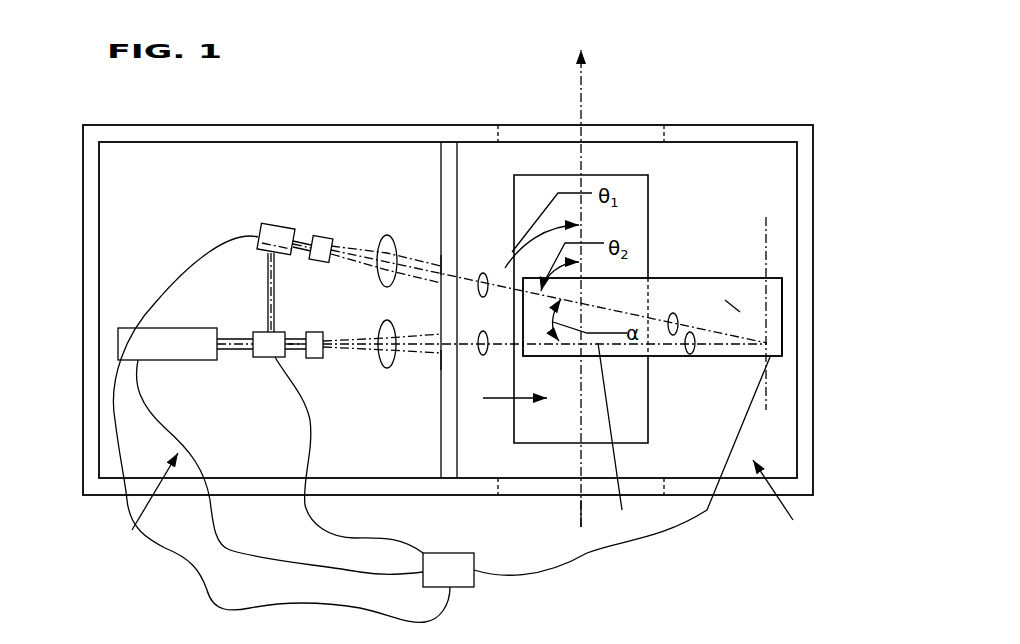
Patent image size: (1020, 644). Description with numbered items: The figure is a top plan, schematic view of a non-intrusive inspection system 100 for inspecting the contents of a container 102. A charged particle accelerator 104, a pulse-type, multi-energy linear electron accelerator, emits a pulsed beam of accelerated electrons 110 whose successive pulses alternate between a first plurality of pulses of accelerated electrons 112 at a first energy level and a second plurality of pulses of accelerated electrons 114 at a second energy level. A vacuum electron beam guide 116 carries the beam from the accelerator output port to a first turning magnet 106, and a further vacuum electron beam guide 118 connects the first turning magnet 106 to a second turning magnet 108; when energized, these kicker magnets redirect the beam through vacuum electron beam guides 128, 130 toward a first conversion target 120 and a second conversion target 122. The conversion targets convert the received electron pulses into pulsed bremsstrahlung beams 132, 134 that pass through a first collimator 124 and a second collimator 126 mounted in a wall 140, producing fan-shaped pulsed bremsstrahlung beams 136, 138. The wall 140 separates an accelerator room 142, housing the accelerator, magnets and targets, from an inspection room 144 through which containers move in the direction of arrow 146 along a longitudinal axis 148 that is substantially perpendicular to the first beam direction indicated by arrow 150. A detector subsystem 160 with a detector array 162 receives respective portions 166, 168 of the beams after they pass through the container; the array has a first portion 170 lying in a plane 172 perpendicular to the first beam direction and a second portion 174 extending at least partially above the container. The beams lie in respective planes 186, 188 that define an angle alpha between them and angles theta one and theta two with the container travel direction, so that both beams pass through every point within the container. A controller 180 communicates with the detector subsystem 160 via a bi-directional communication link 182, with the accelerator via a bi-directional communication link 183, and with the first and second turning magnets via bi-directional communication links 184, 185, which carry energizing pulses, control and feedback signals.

The non-intrusive inspection system 100 is at (397, 82).
The container 102 is at (596, 176).
The charged particle accelerator 104 is at (118, 343).
The first turning magnet 106 is at (260, 358).
The second turning magnet 108 is at (280, 226).
The pulsed beam of accelerated electrons 110 is at (224, 338).
The first plurality of pulses of accelerated electrons 112 is at (266, 308).
The second plurality of pulses of accelerated electrons 114 is at (295, 350).
The vacuum electron beam guide 116 is at (243, 336).
The vacuum electron beam guide 118 is at (275, 284).
The first conversion target 120 is at (313, 359).
The second conversion target 122 is at (321, 236).
The first collimator 124 is at (447, 360).
The second collimator 126 is at (447, 264).
The vacuum electron beam guide 128 is at (294, 340).
The vacuum electron beam guide 130 is at (280, 226).
The pulsed bremsstrahlung beam 132 is at (387, 369).
The pulsed bremsstrahlung beam 134 is at (386, 236).
The first pulsed bremsstrahlung beam 136 is at (484, 355).
The second pulsed bremsstrahlung beam 138 is at (484, 272).
The wall 140 is at (446, 168).
The accelerator room 142 is at (132, 530).
The inspection room 144 is at (793, 520).
The arrow 146 is at (579, 85).
The longitudinal axis 148 is at (581, 497).
The arrow 150 is at (504, 415).
The detector subsystem 160 is at (733, 364).
The detector array 162 is at (652, 317).
The portion of the first pulsed bremsstrahlung beam 166 is at (690, 355).
The portion of the second pulsed bremsstrahlung beam 168 is at (674, 313).
The first portion of the detector array 170 is at (774, 308).
The plane 172 is at (766, 246).
The second portion of the detector array 174 is at (732, 304).
The controller 180 is at (463, 587).
The bi-directional communication link 182 is at (620, 548).
The bi-directional communication link 183 is at (232, 550).
The bi-directional communication link 184 is at (302, 508).
The bi-directional communication link 185 is at (170, 548).
The plane 186 is at (622, 510).
The plane 188 is at (626, 312).